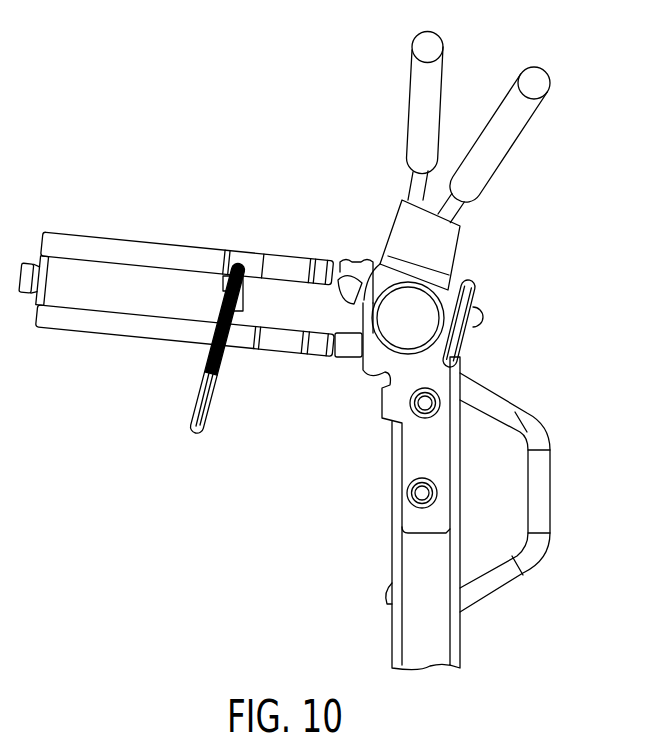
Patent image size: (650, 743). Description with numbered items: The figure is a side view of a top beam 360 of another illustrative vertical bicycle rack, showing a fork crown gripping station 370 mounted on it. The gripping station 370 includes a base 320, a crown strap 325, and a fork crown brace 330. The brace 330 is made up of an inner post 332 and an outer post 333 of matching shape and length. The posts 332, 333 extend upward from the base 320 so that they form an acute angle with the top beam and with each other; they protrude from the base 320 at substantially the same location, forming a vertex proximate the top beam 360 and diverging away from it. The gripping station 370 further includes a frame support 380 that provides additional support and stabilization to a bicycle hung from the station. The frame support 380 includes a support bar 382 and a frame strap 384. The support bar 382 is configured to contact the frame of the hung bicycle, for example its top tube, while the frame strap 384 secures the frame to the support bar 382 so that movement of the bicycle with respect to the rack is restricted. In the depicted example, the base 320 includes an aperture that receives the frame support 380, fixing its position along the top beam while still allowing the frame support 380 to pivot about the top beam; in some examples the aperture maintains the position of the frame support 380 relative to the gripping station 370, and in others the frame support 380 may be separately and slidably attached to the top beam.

The fork crown gripping station 370 is at (190, 98).
The frame support 380 is at (182, 245).
The support bar 382 is at (78, 247).
The frame strap 384 is at (212, 412).
The fork crown brace 330 is at (470, 126).
The outer post 333 is at (422, 88).
The inner post 332 is at (518, 118).
The base 320 is at (447, 235).
The crown strap 325 is at (467, 288).
The top beam 360 is at (415, 325).